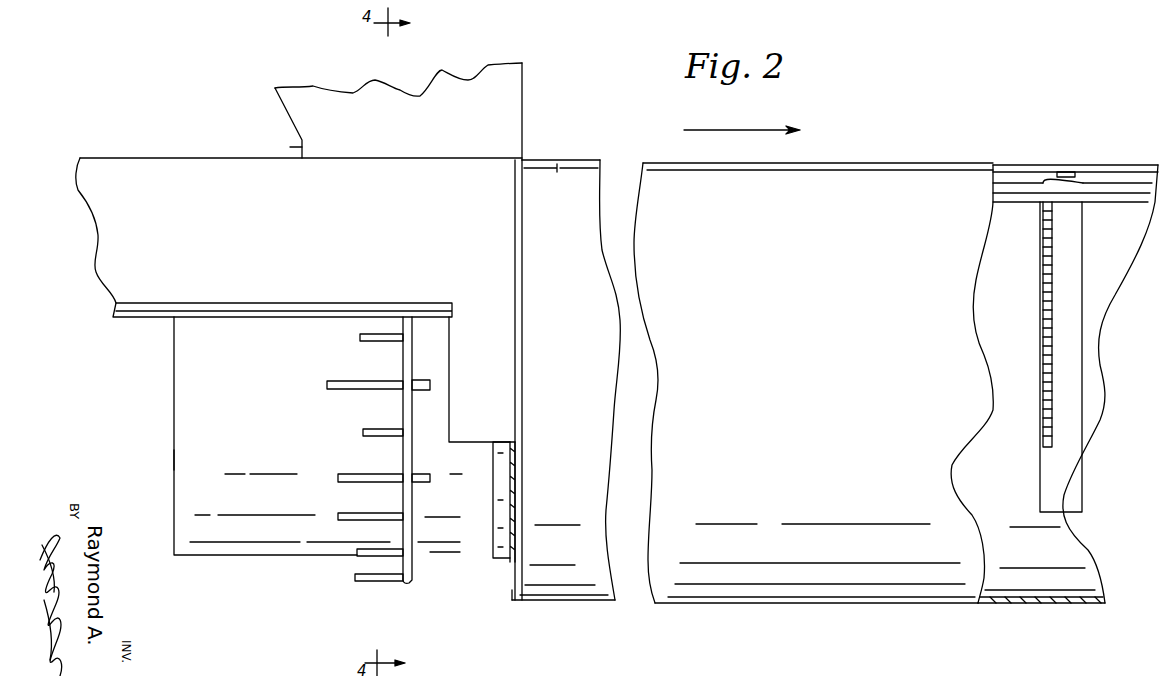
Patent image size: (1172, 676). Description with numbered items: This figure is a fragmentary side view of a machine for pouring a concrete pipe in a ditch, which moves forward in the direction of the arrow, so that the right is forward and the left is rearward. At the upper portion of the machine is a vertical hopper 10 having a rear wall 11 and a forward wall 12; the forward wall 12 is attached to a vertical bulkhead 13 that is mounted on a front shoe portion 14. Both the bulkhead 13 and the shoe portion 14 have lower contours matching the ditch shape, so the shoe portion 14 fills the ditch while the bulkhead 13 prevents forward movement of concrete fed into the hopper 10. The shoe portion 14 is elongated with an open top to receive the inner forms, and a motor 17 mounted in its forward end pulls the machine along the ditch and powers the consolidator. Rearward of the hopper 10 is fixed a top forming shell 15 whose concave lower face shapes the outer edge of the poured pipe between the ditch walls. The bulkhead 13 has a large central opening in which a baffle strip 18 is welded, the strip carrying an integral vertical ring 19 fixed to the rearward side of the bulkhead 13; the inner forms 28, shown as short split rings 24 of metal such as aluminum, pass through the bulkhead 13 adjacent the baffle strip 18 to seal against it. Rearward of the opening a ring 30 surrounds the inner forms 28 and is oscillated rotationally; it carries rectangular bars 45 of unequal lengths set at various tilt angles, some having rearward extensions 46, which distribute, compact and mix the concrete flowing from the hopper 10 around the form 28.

The vertical hopper 10 is at (528, 78).
The rear wall 11 is at (290, 147).
The forward wall 12 is at (524, 134).
The vertical bulkhead 13 is at (514, 590).
The front shoe portion 14 is at (560, 234).
The top forming shell 15 is at (198, 158).
The motor 17 is at (1078, 314).
The baffle strip 18 is at (494, 560).
The vertical ring 19 is at (511, 564).
The split rings 24 is at (174, 450).
The inner forms 28 is at (266, 376).
The ring 30 is at (414, 466).
The bars 45 is at (364, 428).
The rearward extensions 46 is at (421, 390).